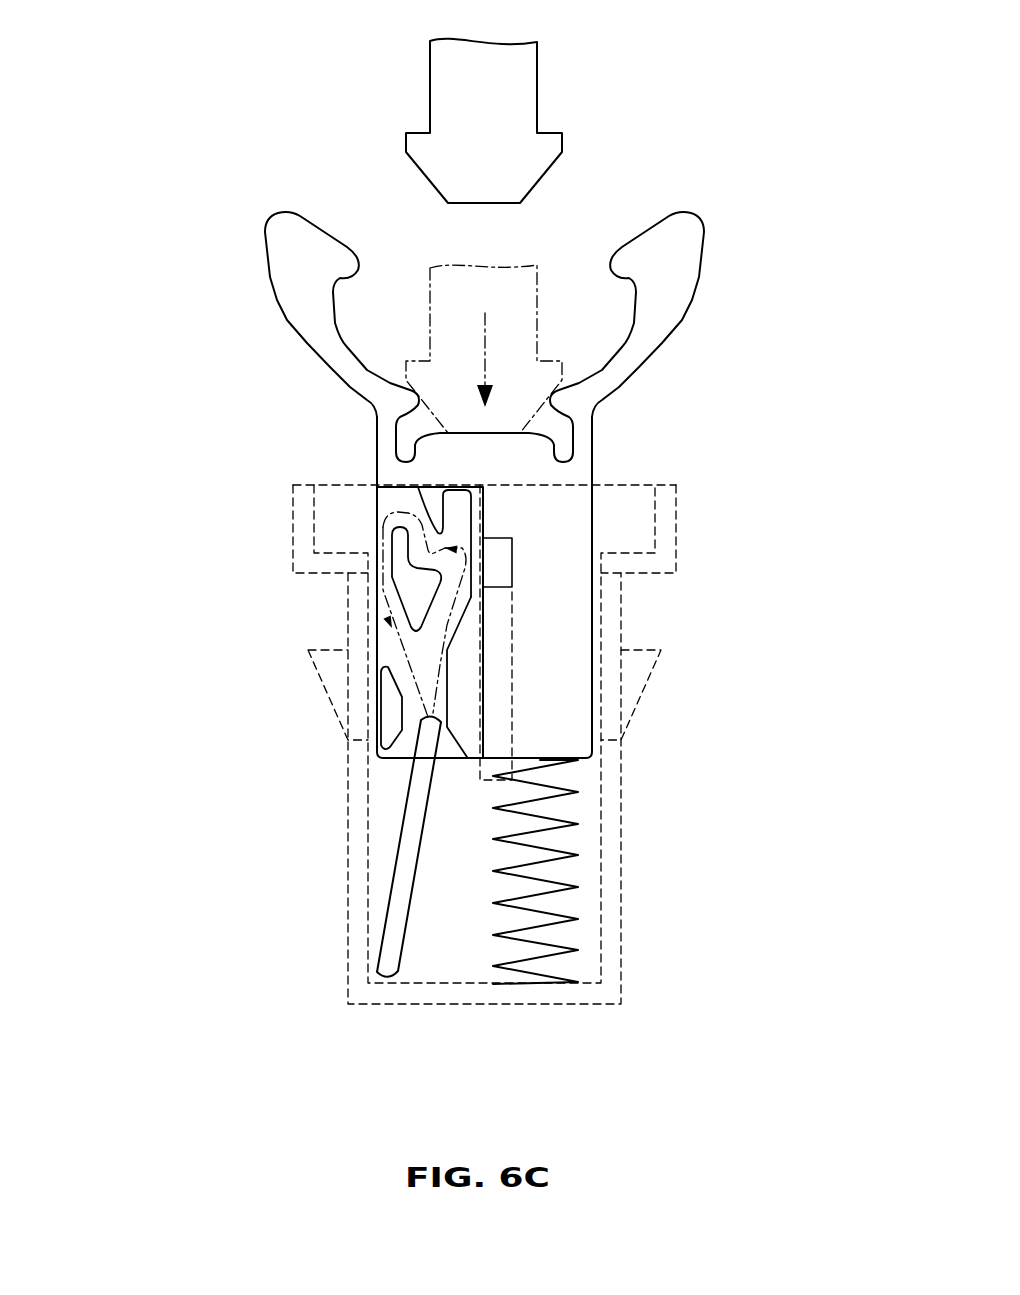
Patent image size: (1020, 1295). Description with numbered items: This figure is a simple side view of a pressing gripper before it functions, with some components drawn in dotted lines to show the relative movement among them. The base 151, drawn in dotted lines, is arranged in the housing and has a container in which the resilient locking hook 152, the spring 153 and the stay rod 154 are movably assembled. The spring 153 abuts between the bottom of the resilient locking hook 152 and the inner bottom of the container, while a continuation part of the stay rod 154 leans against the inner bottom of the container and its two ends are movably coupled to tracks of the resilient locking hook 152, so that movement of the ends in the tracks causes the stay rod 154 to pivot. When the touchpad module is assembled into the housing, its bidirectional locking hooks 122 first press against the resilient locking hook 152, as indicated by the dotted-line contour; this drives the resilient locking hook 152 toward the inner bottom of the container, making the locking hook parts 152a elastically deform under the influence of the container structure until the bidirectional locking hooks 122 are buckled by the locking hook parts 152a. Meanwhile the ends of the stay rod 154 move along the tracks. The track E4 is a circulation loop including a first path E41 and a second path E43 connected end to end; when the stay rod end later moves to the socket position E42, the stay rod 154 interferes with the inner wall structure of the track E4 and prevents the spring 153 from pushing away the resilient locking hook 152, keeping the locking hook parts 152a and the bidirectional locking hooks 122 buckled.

The bidirectional locking hook 122 is at (523, 87).
The locking hook part 152a is at (328, 247).
The resilient locking hook 152 is at (652, 388).
The base 151 is at (685, 532).
The spring 153 is at (557, 912).
The stay rod 154 is at (393, 830).
The track E4 is at (130, 463).
The first path E41 is at (447, 627).
The socket position E42 is at (430, 554).
The second path E43 is at (382, 610).